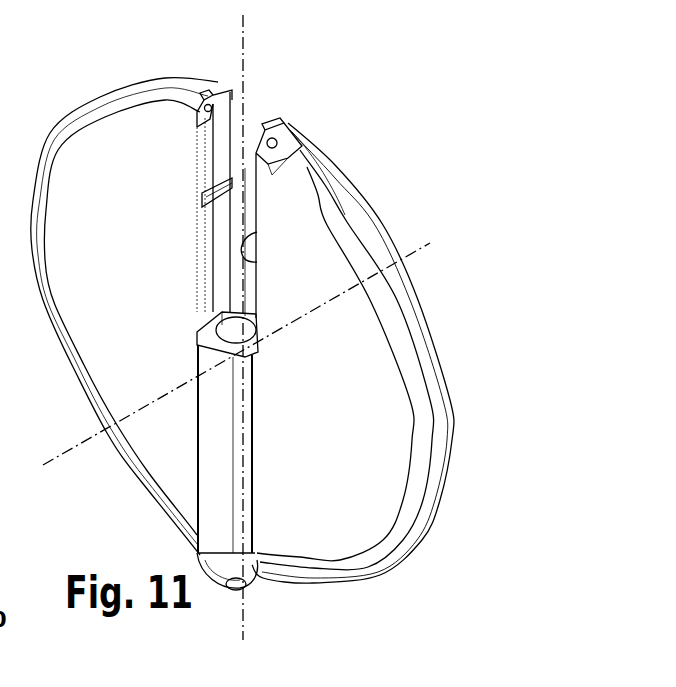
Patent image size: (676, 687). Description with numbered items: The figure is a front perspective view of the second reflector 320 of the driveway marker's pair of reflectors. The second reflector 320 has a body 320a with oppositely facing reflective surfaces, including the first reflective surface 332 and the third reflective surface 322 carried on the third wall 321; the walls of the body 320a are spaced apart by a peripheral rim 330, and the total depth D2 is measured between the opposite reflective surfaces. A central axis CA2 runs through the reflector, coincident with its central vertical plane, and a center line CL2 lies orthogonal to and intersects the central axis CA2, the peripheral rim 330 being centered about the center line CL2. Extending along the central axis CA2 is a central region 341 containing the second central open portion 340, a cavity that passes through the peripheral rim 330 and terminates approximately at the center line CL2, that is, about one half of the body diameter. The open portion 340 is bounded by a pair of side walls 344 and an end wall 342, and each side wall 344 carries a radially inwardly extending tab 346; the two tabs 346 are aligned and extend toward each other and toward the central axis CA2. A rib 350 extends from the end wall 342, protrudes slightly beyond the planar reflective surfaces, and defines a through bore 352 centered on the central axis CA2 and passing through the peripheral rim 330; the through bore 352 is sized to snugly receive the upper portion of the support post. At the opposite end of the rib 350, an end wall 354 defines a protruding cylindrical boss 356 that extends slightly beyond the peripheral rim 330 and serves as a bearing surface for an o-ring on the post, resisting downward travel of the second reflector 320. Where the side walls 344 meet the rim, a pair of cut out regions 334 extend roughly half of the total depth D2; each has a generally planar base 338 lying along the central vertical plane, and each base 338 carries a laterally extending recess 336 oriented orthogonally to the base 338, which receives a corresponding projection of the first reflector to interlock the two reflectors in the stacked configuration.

The second reflector 320 is at (377, 363).
The body 320a is at (340, 367).
The third wall 321 is at (368, 528).
The third reflective surface 322 is at (377, 493).
The peripheral rim 330 is at (438, 425).
The first reflective surface 332 is at (155, 100).
The cut out region 334 is at (221, 72).
The laterally extending recess 336 is at (207, 102).
The generally planar base 338 is at (196, 100).
The second central open portion 340 is at (341, 198).
The central region 341 is at (277, 344).
The end wall 342 is at (187, 330).
The side walls 344 is at (212, 163).
The radially inwardly extending tab 346 is at (213, 213).
The rib 350 is at (213, 453).
The through bore 352 is at (240, 318).
The end wall of the rib 354 is at (232, 597).
The cylindrical boss 356 is at (260, 573).
The central axis CA2 is at (245, 32).
The center line CL2 is at (52, 462).
The total depth D2 is at (335, 335).